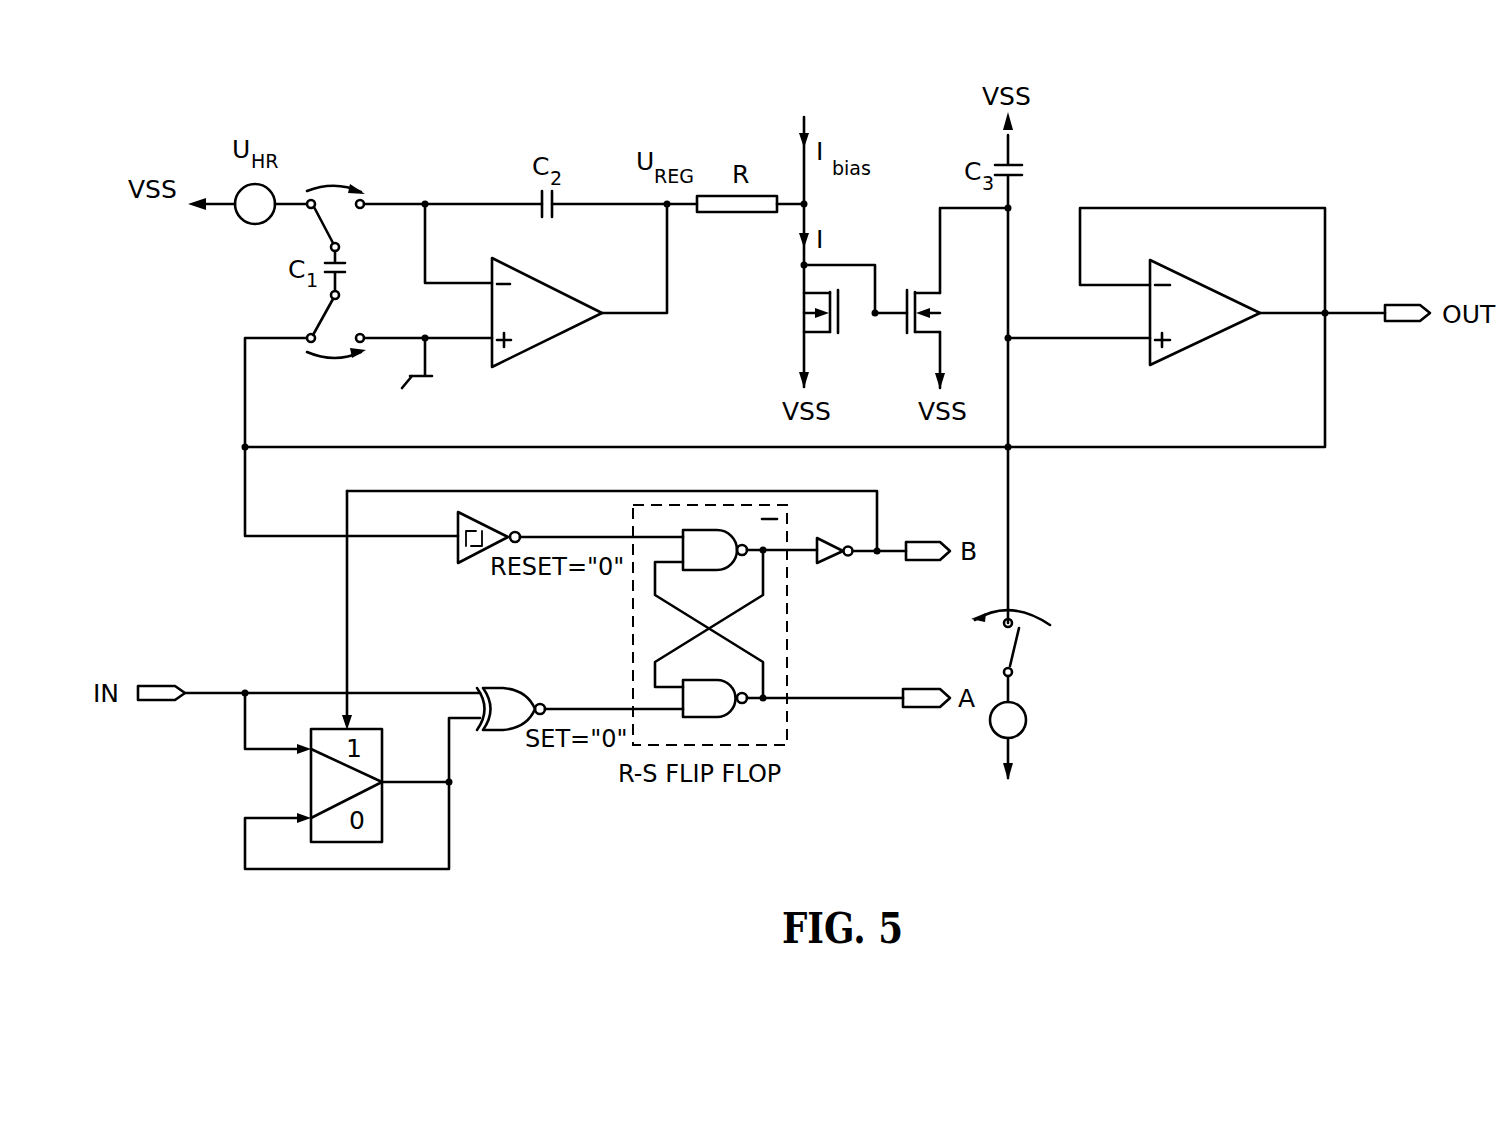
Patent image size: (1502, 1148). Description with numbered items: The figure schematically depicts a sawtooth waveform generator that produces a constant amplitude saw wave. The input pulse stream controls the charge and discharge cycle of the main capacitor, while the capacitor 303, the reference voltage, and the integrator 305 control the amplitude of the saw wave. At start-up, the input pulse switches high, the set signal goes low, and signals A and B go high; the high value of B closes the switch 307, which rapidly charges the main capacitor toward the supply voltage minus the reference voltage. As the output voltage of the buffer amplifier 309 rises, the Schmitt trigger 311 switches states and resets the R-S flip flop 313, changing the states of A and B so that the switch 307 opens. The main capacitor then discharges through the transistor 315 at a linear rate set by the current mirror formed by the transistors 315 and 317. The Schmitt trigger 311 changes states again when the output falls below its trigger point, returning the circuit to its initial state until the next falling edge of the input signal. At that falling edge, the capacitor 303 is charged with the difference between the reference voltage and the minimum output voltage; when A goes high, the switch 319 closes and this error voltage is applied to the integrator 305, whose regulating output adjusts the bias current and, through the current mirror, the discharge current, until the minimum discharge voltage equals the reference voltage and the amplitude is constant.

The capacitor 303 is at (300, 285).
The integrator 305 is at (547, 312).
The switch 307 is at (1042, 626).
The buffer amplifier 309 is at (1205, 312).
The Schmitt trigger 311 is at (462, 560).
The R-S flip flop 313 is at (788, 653).
The current mirror transistor 315 is at (945, 315).
The current mirror transistor 317 is at (800, 313).
The switch 319 is at (362, 146).